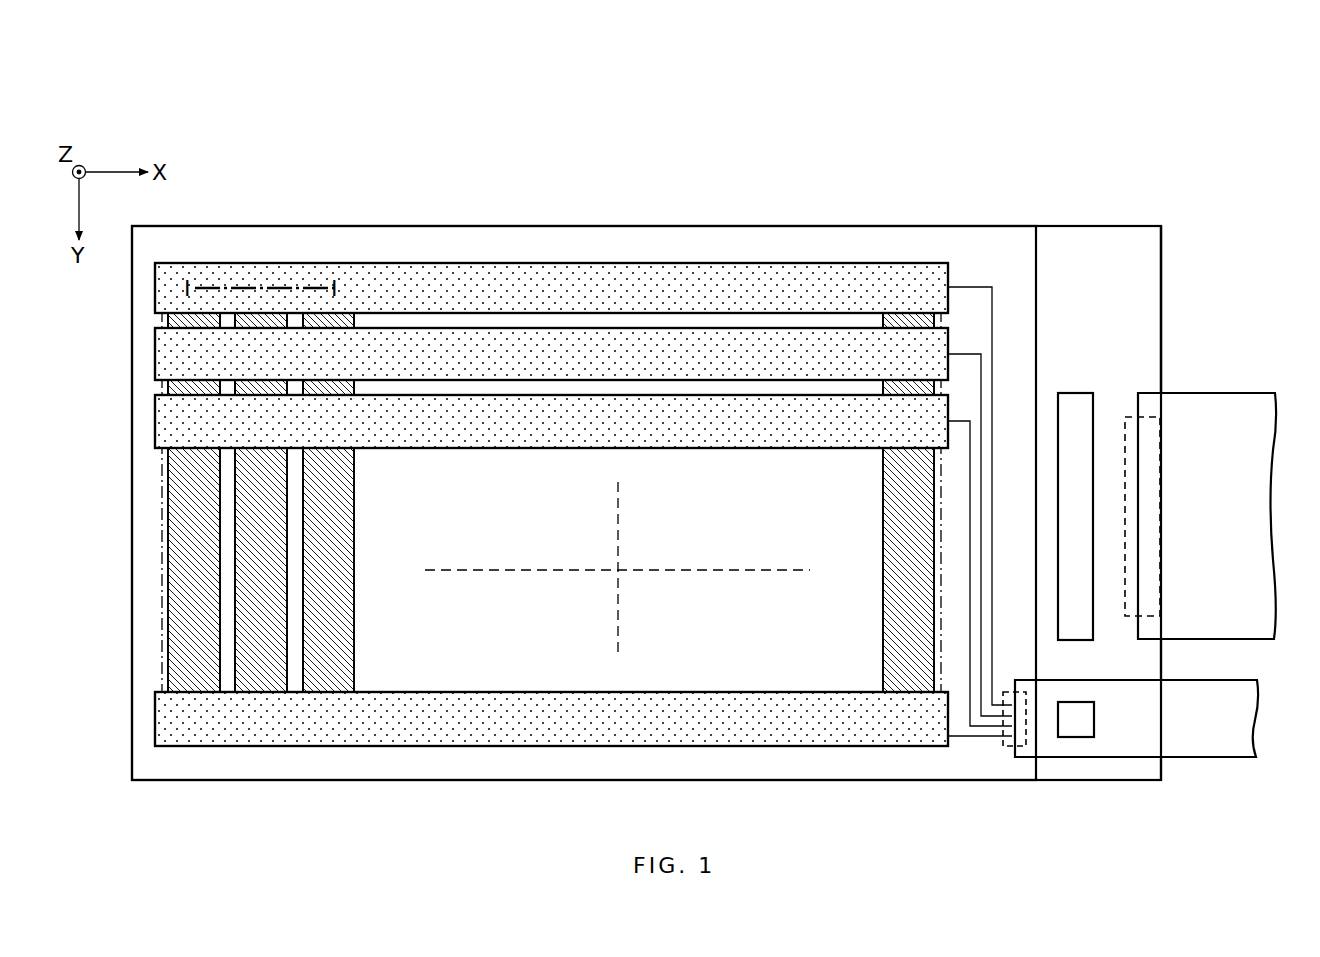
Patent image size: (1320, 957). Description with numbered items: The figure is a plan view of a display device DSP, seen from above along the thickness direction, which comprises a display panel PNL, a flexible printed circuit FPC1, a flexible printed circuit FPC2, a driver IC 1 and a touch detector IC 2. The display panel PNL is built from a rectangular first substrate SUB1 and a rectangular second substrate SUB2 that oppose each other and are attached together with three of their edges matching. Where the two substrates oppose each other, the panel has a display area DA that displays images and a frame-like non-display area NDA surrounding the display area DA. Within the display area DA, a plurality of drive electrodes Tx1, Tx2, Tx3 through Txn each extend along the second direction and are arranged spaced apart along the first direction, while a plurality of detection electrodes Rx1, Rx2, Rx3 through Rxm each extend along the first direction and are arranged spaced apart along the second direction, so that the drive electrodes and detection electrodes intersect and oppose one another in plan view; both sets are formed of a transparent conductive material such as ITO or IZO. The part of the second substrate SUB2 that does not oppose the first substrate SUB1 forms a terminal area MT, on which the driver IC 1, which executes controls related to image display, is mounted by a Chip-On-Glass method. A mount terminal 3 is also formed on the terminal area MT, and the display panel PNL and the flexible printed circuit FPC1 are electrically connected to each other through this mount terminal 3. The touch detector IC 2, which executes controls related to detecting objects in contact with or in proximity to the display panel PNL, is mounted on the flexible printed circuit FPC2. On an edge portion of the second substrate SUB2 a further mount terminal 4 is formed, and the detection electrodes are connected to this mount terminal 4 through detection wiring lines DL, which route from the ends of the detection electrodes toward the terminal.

The display device DSP is at (718, 108).
The display panel PNL is at (460, 221).
The non-display area NDA is at (622, 244).
The display area DA is at (162, 523).
The first substrate SUB1 is at (1118, 226).
The second substrate SUB2 is at (1000, 226).
The terminal area MT is at (1148, 260).
The detection electrode Rx1 is at (737, 285).
The detection electrode Rx2 is at (787, 350).
The detection electrode Rx3 is at (838, 415).
The detection electrode Rxm is at (708, 698).
The drive electrode Tx1 is at (188, 590).
The drive electrode Tx2 is at (262, 622).
The drive electrode Tx3 is at (320, 657).
The drive electrode Txn is at (895, 658).
The detection wiring line DL is at (975, 290).
The driver IC 1 is at (1075, 393).
The touch detector IC 2 is at (1076, 738).
The mount terminal 3 is at (1160, 551).
The mount terminal 4 is at (1003, 747).
The flexible printed circuit FPC1 is at (1232, 390).
The flexible printed circuit FPC2 is at (1213, 758).